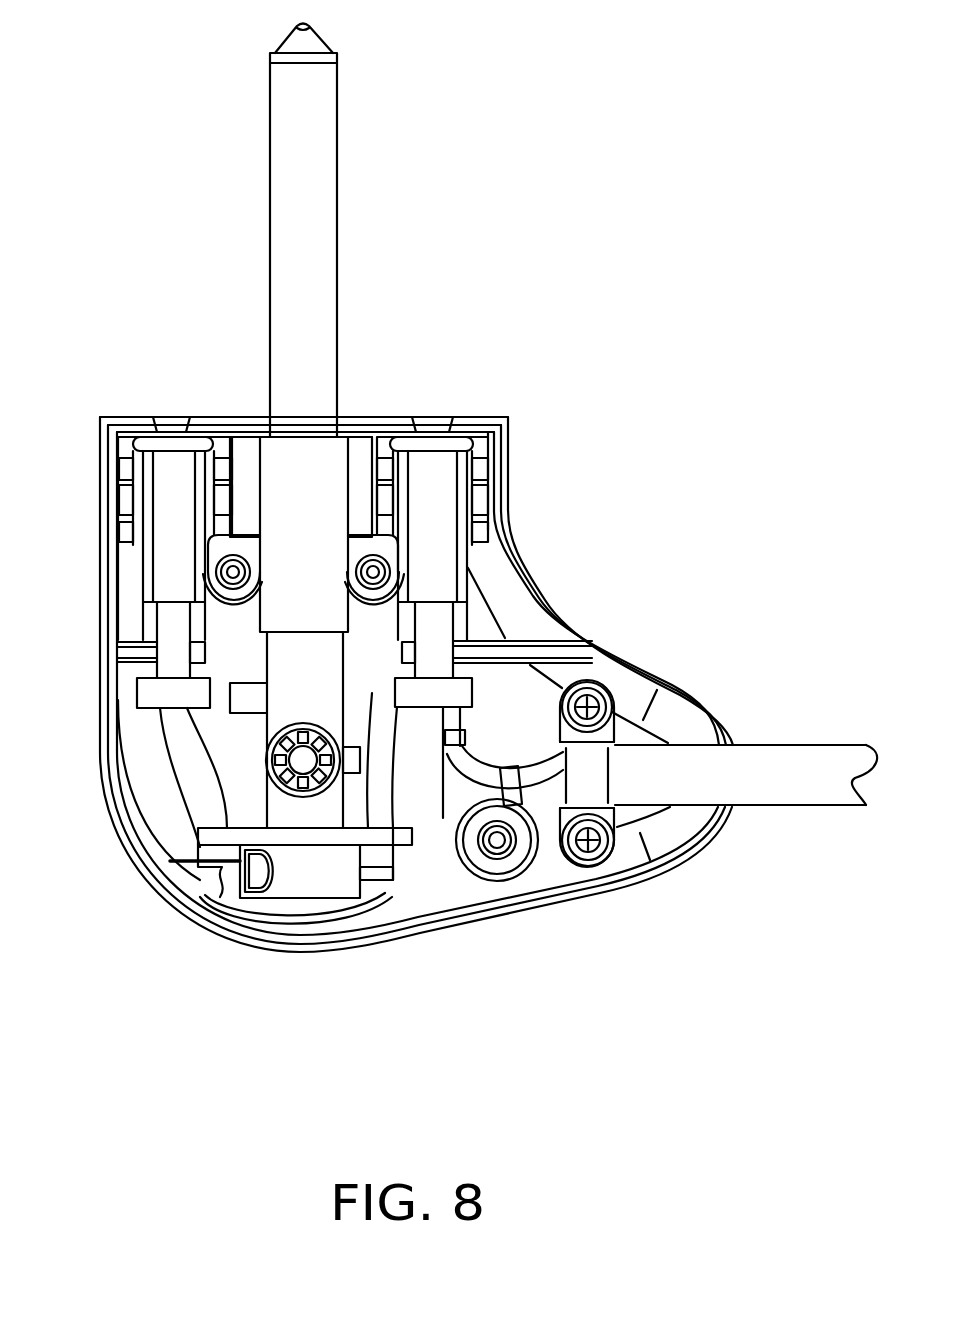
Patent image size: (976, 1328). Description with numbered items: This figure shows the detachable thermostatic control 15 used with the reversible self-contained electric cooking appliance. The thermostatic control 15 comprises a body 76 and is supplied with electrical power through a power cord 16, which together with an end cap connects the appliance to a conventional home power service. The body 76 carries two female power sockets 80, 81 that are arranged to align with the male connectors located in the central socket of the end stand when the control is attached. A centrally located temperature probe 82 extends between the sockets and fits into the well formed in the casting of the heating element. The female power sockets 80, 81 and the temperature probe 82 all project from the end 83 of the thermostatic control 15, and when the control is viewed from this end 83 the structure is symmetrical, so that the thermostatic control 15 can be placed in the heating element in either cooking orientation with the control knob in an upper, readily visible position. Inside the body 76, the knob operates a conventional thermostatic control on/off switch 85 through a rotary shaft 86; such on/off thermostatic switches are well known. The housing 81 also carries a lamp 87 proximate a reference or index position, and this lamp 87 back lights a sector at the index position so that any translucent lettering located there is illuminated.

The thermostatic control 15 is at (637, 571).
The power cord 16 is at (807, 745).
The body 76 is at (205, 935).
The female power socket 80 is at (172, 415).
The female power socket 81 is at (435, 414).
The temperature probe 82 is at (317, 203).
The end 83 is at (420, 323).
The thermostatic control on/off switch 85 is at (288, 688).
The rotary shaft 86 is at (268, 773).
The lamp 87 is at (317, 887).